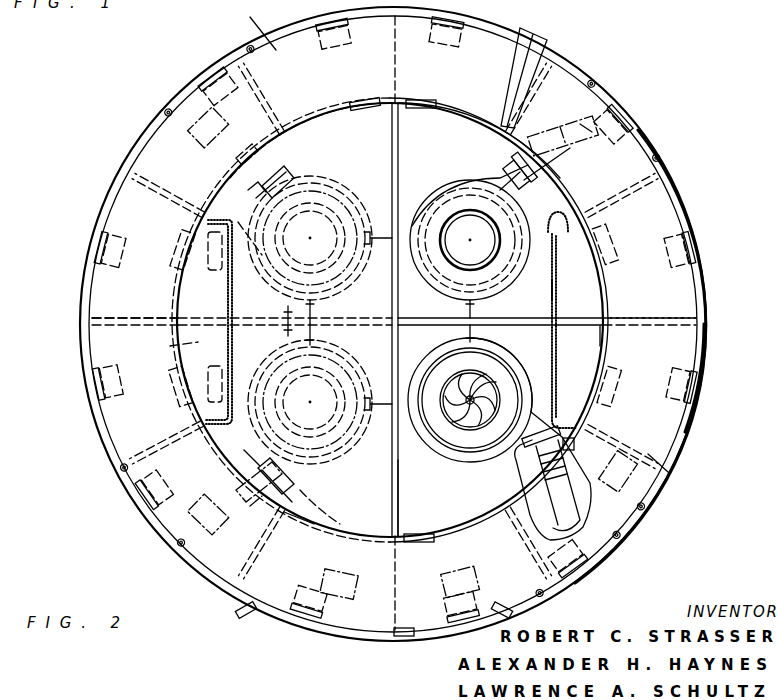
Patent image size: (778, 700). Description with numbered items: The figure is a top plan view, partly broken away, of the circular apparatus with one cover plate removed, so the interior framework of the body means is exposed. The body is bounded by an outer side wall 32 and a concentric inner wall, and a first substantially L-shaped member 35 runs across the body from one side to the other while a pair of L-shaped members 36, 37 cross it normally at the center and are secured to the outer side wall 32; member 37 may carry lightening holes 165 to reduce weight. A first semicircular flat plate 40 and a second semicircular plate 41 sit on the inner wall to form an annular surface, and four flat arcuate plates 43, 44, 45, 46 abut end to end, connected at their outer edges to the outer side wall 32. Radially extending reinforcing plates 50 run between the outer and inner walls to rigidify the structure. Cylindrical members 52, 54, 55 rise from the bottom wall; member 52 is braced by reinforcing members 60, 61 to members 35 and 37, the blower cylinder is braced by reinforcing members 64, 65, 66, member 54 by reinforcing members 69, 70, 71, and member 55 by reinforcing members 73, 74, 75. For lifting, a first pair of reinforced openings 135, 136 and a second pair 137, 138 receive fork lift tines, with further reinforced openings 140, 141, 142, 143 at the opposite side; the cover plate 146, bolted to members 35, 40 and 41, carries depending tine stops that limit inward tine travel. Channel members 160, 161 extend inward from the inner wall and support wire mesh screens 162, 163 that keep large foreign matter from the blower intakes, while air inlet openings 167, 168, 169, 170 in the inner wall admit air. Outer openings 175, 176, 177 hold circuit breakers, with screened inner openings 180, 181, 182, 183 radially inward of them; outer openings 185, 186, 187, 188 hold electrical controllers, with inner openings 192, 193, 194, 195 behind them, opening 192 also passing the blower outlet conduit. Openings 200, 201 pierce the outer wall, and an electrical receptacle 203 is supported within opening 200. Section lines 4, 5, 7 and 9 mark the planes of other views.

The section line 4- 4 is at (383, 370).
The section line 5- 5 is at (711, 398).
The section line 7- 7 is at (451, 312).
The section line 9- 9 is at (379, 516).
The outer side wall 32 is at (500, 606).
The first L-shaped member 35 is at (400, 488).
The L-shaped member 36 is at (284, 320).
The L-shaped member 37 is at (512, 318).
The first semicircular flat plate 40 is at (442, 112).
The second semicircular flat plate 41 is at (330, 110).
The flat arcuate plate 43 is at (248, 612).
The flat arcuate plate 44 is at (410, 628).
The flat arcuate plate 45 is at (668, 222).
The flat arcuate plate 46 is at (262, 30).
The reinforcing plates 50 is at (262, 52).
The cylindrical member 52 is at (452, 282).
The cylindrical member 54 is at (330, 458).
The cylindrical member 55 is at (338, 180).
The reinforcing member 60 is at (398, 240).
The reinforcing member 61 is at (476, 306).
The reinforcing member 64 is at (412, 378).
The reinforcing member 65 is at (486, 330).
The reinforcing member 66 is at (524, 178).
The reinforcing member 69 is at (366, 418).
The reinforcing member 70 is at (300, 336).
The reinforcing member 71 is at (258, 458).
The reinforcing member 73 is at (377, 226).
The reinforcing member 74 is at (318, 312).
The reinforcing member 75 is at (262, 182).
The reinforced opening 135 is at (712, 352).
The reinforced opening 136 is at (606, 374).
The reinforced opening 137 is at (680, 260).
The reinforced opening 138 is at (606, 262).
The reinforced opening 140 is at (104, 380).
The reinforced opening 141 is at (178, 404).
The reinforced opening 142 is at (104, 250).
The reinforced opening 143 is at (176, 264).
The cover plate 146 is at (338, 518).
The channel member 160 is at (566, 320).
The channel member 161 is at (205, 210).
The wire mesh screen 162 is at (556, 280).
The wire mesh screen 163 is at (232, 268).
The lightening holes 165 is at (104, 320).
The air inlet opening 167 is at (600, 334).
The air inlet opening 168 is at (608, 316).
The air inlet opening 169 is at (212, 322).
The air inlet opening 170 is at (178, 350).
The opening 175 is at (456, 620).
The opening 176 is at (280, 616).
The opening 177 is at (448, 30).
The opening 180 is at (410, 542).
The opening 181 is at (296, 520).
The opening 182 is at (440, 104).
The opening 183 is at (318, 114).
The opening 185 is at (566, 580).
The opening 186 is at (160, 528).
The opening 187 is at (644, 148).
The opening 188 is at (180, 93).
The opening 192 is at (574, 446).
The opening 193 is at (286, 500).
The opening 194 is at (526, 140).
The opening 195 is at (262, 146).
The opening 200 is at (668, 486).
The opening 201 is at (145, 135).
The electrical receptacle 203 is at (668, 466).